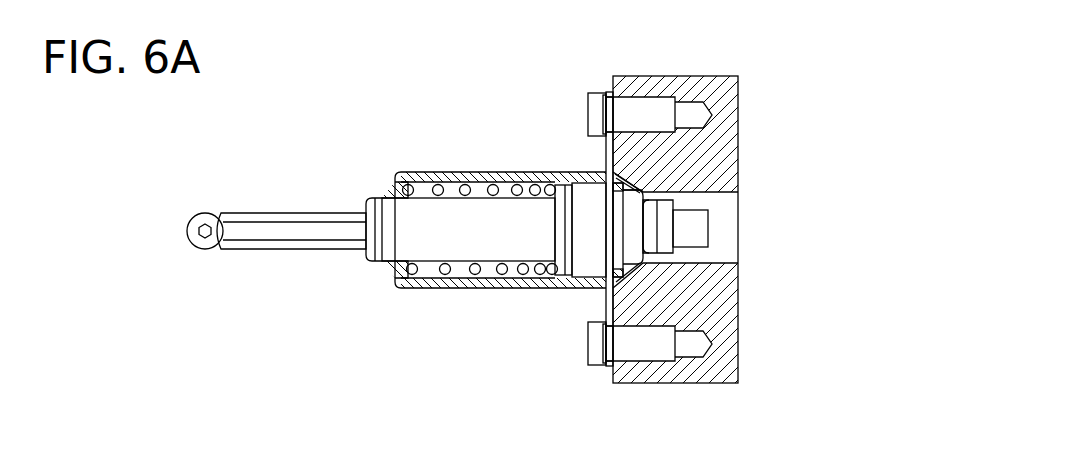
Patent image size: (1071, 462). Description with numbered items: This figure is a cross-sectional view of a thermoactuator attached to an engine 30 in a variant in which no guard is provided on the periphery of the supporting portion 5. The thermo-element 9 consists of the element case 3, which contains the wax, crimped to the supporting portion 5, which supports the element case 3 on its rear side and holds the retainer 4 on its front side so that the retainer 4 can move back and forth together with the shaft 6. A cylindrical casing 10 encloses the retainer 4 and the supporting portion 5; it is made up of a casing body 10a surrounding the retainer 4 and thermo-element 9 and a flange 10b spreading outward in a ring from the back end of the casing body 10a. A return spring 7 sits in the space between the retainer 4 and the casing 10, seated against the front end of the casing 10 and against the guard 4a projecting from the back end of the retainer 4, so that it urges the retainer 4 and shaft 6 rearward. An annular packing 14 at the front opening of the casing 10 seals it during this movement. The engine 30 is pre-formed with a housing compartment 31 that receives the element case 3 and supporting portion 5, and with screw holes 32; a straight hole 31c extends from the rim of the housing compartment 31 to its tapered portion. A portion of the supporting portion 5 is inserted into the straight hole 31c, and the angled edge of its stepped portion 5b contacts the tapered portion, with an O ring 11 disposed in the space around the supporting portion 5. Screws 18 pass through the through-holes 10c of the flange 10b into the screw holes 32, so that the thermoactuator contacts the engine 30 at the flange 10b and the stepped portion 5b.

The element case 3 is at (695, 230).
The retainer 4 is at (436, 245).
The guard 4a is at (565, 276).
The supporting portion 5 is at (600, 276).
The stepped portion 5b is at (650, 205).
The shaft 6 is at (285, 250).
The return spring 7 is at (465, 182).
The thermo-element 9 is at (648, 191).
The casing 10 is at (502, 230).
The casing body 10a is at (417, 172).
The flange 10b is at (606, 91).
The through-holes 10c is at (606, 103).
The O ring 11 is at (640, 180).
The annular packing 14 is at (383, 275).
The screws 18 is at (588, 126).
The engine 30 is at (710, 76).
The housing compartment 31 is at (725, 263).
The straight hole 31c is at (628, 181).
The screw holes 32 is at (705, 112).